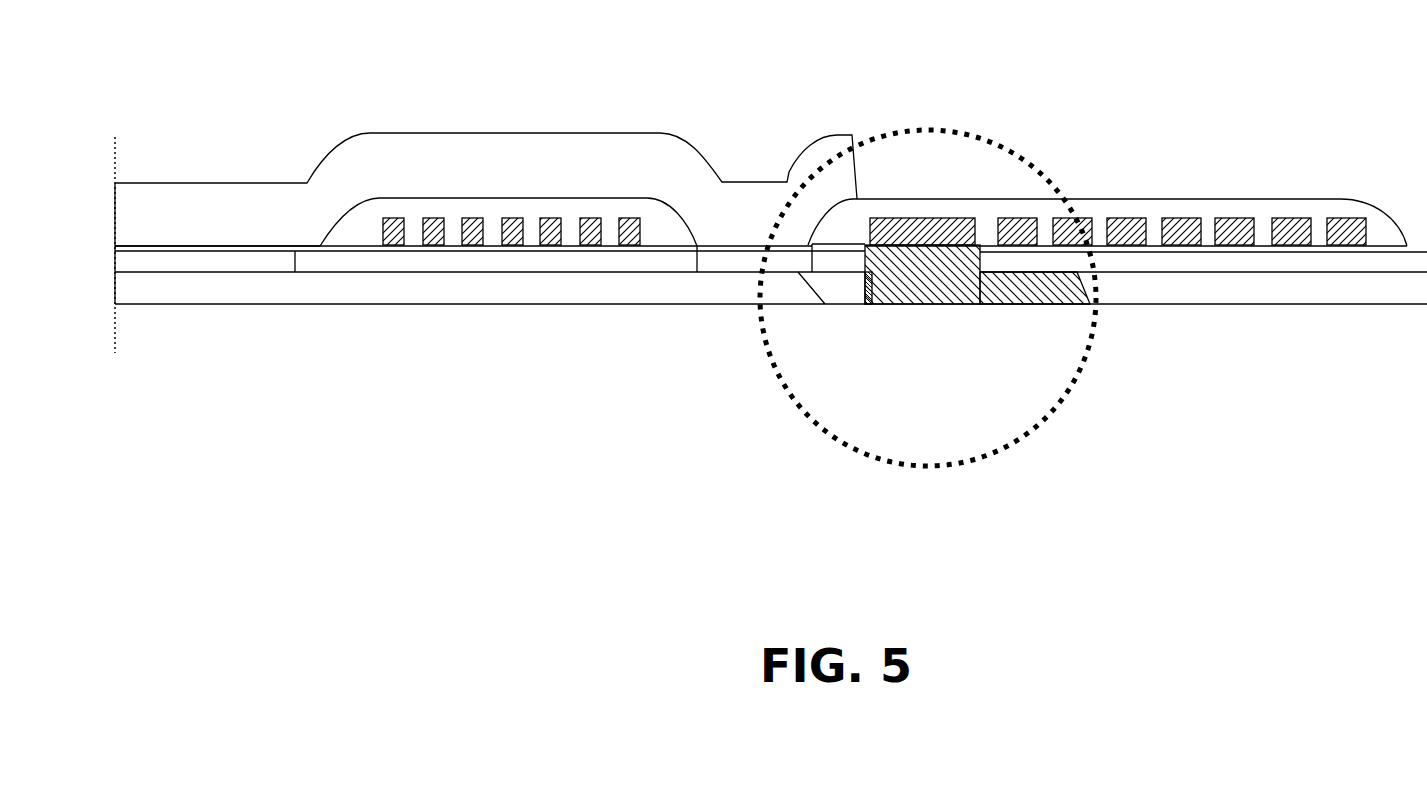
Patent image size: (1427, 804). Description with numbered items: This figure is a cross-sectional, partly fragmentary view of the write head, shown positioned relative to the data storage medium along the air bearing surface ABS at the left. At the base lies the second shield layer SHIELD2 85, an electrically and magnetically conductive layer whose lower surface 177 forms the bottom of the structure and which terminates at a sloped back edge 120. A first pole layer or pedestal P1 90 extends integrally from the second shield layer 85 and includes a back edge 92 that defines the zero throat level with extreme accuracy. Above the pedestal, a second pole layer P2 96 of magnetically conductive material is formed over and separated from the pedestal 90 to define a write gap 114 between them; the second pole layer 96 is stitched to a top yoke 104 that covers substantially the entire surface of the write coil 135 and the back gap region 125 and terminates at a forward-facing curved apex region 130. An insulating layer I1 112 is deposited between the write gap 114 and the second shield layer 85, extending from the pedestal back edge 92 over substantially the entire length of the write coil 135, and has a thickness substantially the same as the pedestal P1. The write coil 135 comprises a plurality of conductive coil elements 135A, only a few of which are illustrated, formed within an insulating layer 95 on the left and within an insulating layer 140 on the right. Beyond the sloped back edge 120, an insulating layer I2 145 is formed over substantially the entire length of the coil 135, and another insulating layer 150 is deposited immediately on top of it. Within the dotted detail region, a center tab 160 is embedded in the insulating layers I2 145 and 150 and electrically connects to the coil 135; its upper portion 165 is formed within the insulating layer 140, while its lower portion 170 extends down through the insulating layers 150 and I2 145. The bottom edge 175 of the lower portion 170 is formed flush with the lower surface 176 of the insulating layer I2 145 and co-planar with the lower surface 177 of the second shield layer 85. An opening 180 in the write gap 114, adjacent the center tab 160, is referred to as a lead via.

The air bearing surface ABS is at (117, 223).
The second pole layer P2 is at (233, 183).
The first pole layer or pedestal P1 is at (195, 277).
The second pole layer 96 is at (217, 243).
The top yoke 104 is at (483, 203).
The insulating layer 95 is at (642, 207).
The write gap 114 is at (138, 247).
The pedestal 90 is at (205, 263).
The back edge 92 is at (296, 268).
The insulating layer 112 is at (496, 260).
The insulating layer I1 is at (588, 260).
The back gap region 125 is at (722, 250).
The second shield layer 85 is at (771, 288).
The second shield layer SHIELD2 is at (493, 297).
The lower surface 177 is at (262, 305).
The conductive coil elements 135A is at (472, 217).
The curved apex region 130 is at (808, 142).
The sloped back edge 120 is at (847, 293).
The insulating layer 140 is at (1263, 212).
The write coil 135 is at (1177, 197).
The upper portion 165 is at (923, 223).
The center tab 160 is at (907, 305).
The opening 180 is at (882, 304).
The lower portion 170 is at (963, 293).
The bottom edge 175 is at (1023, 304).
The insulating layer 150 is at (1157, 260).
The insulating layer 145 is at (1243, 290).
The insulating layer I2 is at (1182, 305).
The lower surface 176 is at (1263, 305).